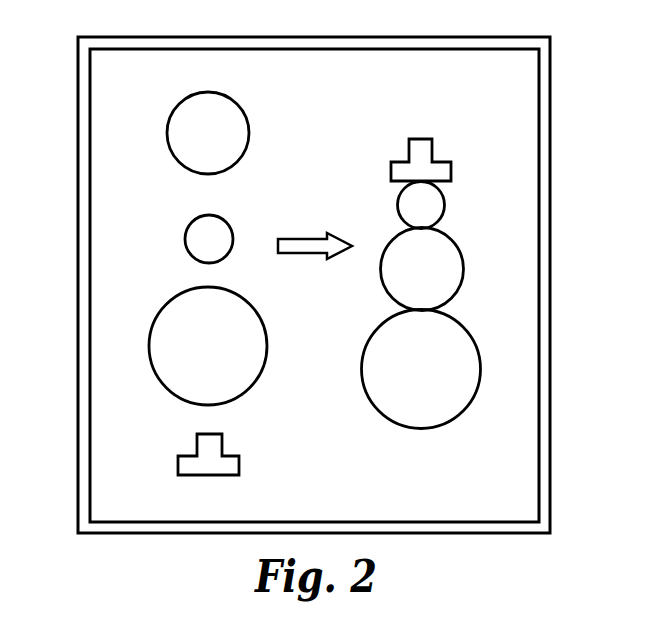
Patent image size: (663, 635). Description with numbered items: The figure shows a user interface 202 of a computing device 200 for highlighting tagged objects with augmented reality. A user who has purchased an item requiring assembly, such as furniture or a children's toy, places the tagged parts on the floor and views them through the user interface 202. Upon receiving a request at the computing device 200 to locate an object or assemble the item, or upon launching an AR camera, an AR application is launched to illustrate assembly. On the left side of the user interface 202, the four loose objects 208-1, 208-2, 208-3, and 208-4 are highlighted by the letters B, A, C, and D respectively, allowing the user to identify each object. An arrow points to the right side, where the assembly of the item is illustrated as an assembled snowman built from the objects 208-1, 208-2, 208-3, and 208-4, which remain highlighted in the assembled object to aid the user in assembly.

The computing device 200 is at (80, 73).
The user interface 202 is at (520, 110).
The object 208-1 is at (180, 133).
The object 208-2 is at (190, 235).
The object 208-3 is at (168, 335).
The object 208-4 is at (202, 445).